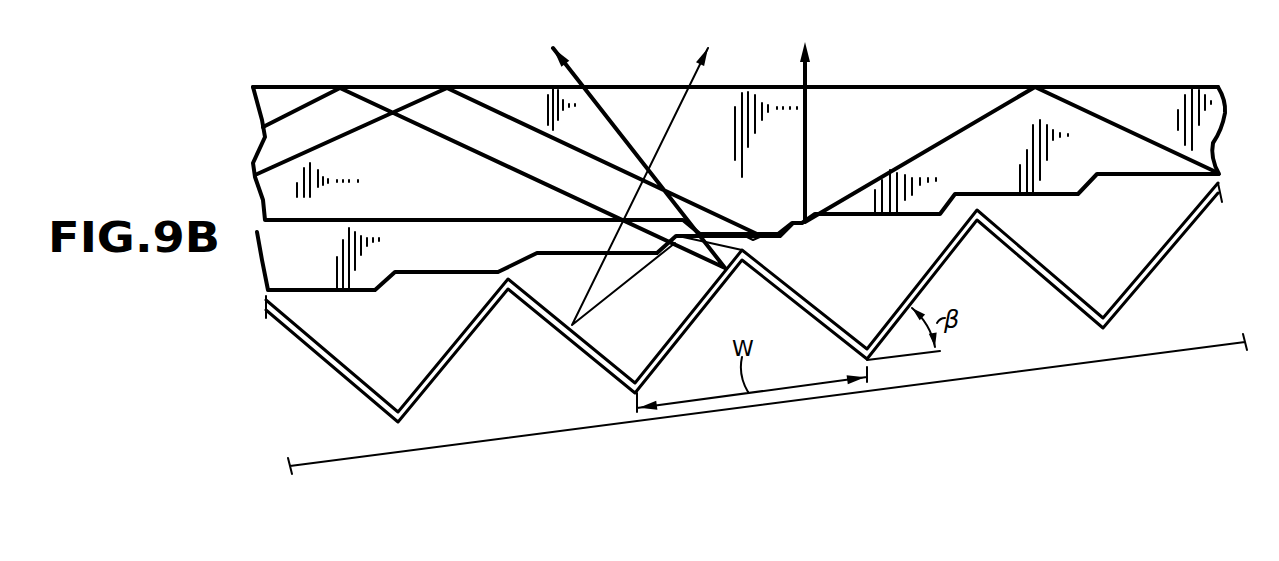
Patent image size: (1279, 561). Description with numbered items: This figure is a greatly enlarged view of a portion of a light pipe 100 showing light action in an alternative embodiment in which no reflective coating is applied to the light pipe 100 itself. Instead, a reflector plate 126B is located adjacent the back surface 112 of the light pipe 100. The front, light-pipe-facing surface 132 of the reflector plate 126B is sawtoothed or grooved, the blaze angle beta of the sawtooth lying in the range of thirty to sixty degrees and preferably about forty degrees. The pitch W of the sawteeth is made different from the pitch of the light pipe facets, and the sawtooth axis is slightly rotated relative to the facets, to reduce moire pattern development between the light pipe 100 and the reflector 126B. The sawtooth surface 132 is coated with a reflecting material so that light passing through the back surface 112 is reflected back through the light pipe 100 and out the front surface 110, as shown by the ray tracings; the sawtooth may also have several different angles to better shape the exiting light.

The light pipe 100 is at (365, 155).
The front surface 110 is at (477, 86).
The back surface 112 is at (432, 272).
The sawtooth surface 132 is at (460, 333).
The reflector plate 126B is at (822, 403).